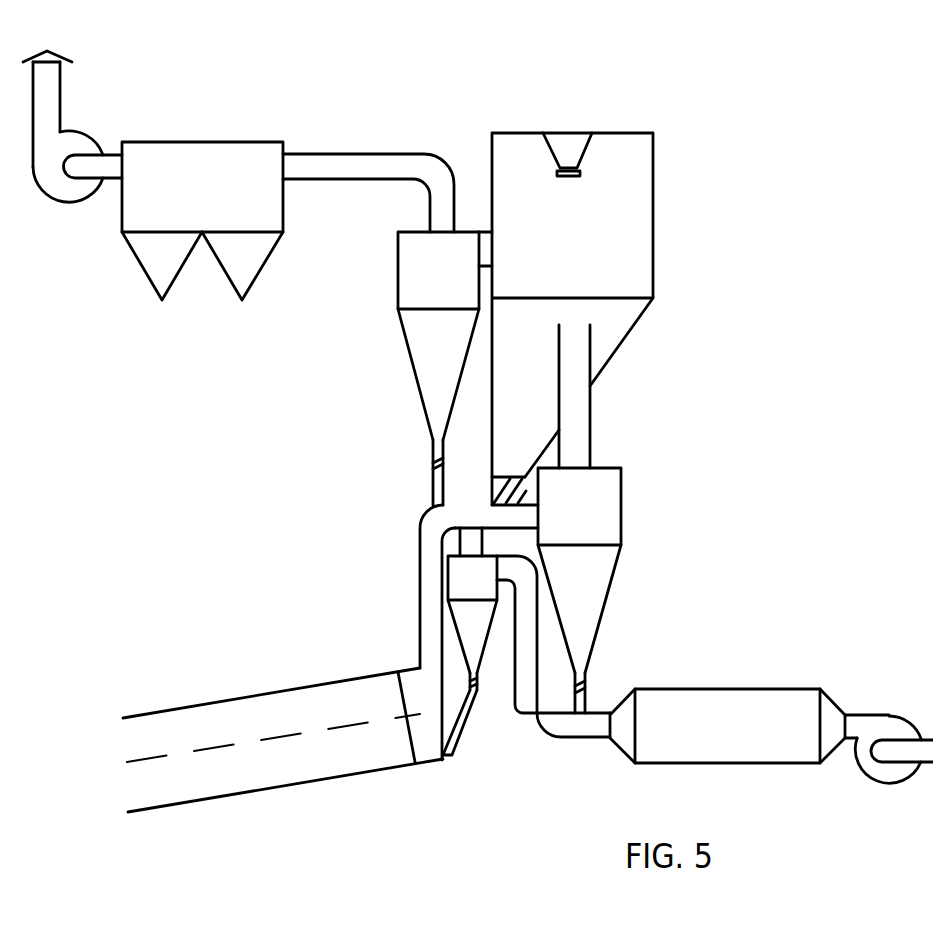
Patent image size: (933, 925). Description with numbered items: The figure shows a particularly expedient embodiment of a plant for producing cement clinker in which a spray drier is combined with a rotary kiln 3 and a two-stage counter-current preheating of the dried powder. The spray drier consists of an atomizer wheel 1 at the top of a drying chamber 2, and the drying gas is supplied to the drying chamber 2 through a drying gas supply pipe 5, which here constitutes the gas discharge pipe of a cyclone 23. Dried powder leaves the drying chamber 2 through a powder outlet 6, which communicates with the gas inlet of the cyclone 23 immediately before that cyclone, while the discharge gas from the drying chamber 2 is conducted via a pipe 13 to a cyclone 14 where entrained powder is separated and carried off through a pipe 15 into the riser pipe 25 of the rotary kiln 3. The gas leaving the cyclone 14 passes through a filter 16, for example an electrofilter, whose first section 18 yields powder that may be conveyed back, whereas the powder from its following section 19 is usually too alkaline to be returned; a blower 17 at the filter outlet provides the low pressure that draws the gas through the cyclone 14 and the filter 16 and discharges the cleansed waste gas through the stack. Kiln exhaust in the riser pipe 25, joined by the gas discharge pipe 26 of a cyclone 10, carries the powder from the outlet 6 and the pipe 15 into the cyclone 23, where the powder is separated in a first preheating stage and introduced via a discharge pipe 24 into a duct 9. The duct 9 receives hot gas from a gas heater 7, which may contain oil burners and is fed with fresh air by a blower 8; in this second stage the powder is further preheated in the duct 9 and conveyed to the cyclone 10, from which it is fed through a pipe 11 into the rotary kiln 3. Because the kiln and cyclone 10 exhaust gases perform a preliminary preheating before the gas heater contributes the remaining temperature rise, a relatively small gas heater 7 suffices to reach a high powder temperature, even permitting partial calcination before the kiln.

The atomizer wheel 1 is at (572, 140).
The drying chamber 2 is at (650, 213).
The rotary kiln 3 is at (265, 707).
The drying gas supply pipe 5 is at (583, 410).
The powder outlet 6 is at (490, 498).
The gas heater 7 is at (713, 753).
The blower 8 is at (880, 727).
The duct 9 is at (553, 730).
The cyclone 10 is at (476, 643).
The pipe 11 is at (465, 712).
The pipe 13 is at (485, 235).
The cyclone 14 is at (403, 290).
The pipe 15 is at (436, 467).
The filter 16 is at (252, 147).
The blower 17 is at (70, 193).
The first filter section 18 is at (227, 267).
The following filter section 19 is at (153, 277).
The cyclone 23 is at (610, 518).
The discharge pipe 24 is at (587, 688).
The riser pipe 25 is at (427, 610).
The gas discharge pipe 26 is at (476, 543).